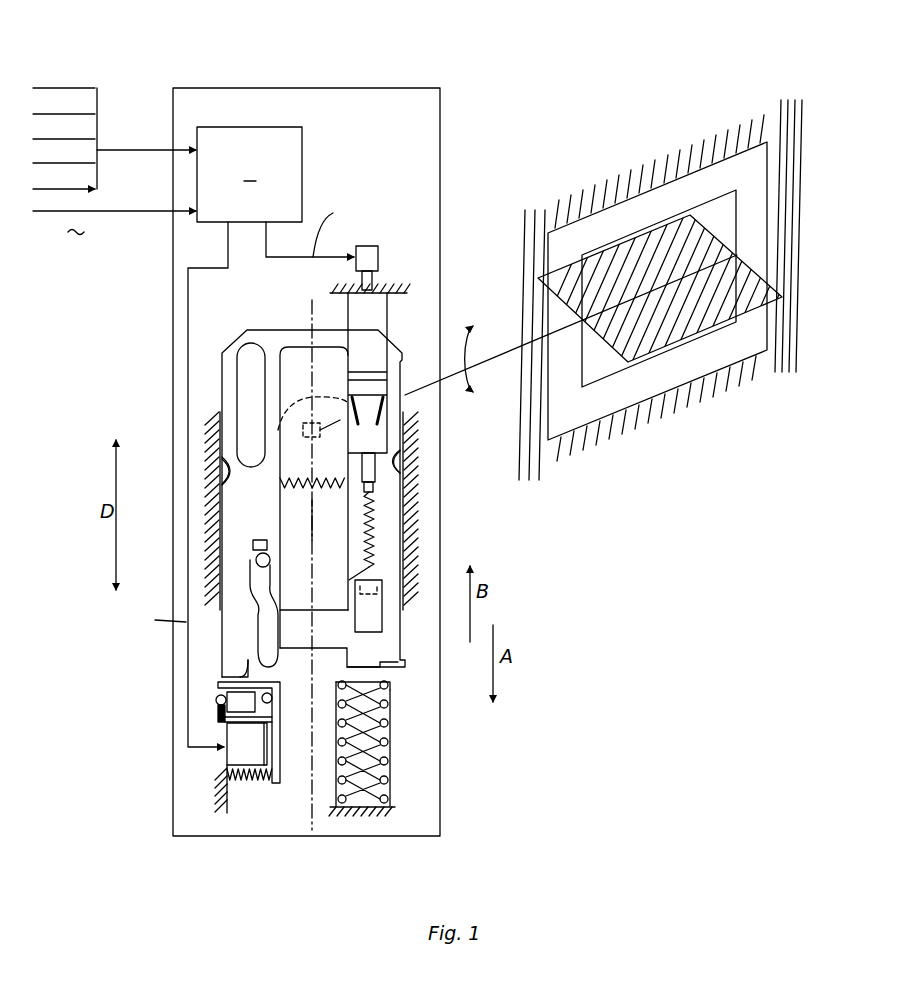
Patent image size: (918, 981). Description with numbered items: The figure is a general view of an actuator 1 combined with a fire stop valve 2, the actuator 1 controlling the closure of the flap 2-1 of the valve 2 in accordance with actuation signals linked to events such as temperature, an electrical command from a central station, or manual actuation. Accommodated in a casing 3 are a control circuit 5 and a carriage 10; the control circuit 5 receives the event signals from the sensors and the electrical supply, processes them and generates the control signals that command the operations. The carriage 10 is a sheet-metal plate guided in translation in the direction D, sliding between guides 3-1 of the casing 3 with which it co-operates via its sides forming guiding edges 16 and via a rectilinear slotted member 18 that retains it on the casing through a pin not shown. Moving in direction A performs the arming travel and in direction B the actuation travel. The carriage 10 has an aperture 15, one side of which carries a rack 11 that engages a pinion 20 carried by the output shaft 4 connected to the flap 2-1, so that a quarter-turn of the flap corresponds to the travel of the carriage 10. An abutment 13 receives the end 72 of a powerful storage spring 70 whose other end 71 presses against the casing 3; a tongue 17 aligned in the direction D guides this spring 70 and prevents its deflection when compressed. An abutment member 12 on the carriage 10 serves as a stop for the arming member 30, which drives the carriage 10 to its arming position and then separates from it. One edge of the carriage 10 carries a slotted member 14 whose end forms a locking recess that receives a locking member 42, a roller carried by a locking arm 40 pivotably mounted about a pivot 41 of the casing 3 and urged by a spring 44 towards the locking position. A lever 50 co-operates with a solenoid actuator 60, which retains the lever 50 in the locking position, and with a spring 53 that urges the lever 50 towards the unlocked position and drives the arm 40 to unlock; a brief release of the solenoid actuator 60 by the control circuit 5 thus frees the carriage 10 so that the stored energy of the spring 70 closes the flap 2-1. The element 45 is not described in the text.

The actuator 1 is at (430, 72).
The fire stop valve 2 is at (780, 150).
The flap 2-1 is at (770, 262).
The casing 3 is at (441, 129).
The guides 3-1 is at (212, 528).
The output shaft 4 is at (477, 396).
The control circuit 5 is at (222, 404).
The carriage 10 is at (267, 342).
The rack 11 is at (365, 528).
The abutment member 12 is at (376, 622).
The abutment 13 is at (392, 670).
The slotted member 14 is at (240, 583).
The aperture 15 is at (305, 532).
The guiding edges 16 is at (220, 461).
The tongue 17 is at (390, 693).
The slotted member 18 is at (252, 385).
The pinion 20 is at (288, 372).
The arming member 30 is at (373, 311).
The locking arm 40 is at (248, 665).
The pivot 41 is at (270, 701).
The locking member 42 is at (262, 560).
The spring 44 is at (218, 710).
The contact 45 is at (217, 698).
The lever 50 is at (287, 752).
The spring 53 is at (242, 787).
The solenoid actuator 60 is at (240, 753).
The spring 70 is at (390, 775).
The end 71 is at (392, 800).
The end 72 is at (338, 692).